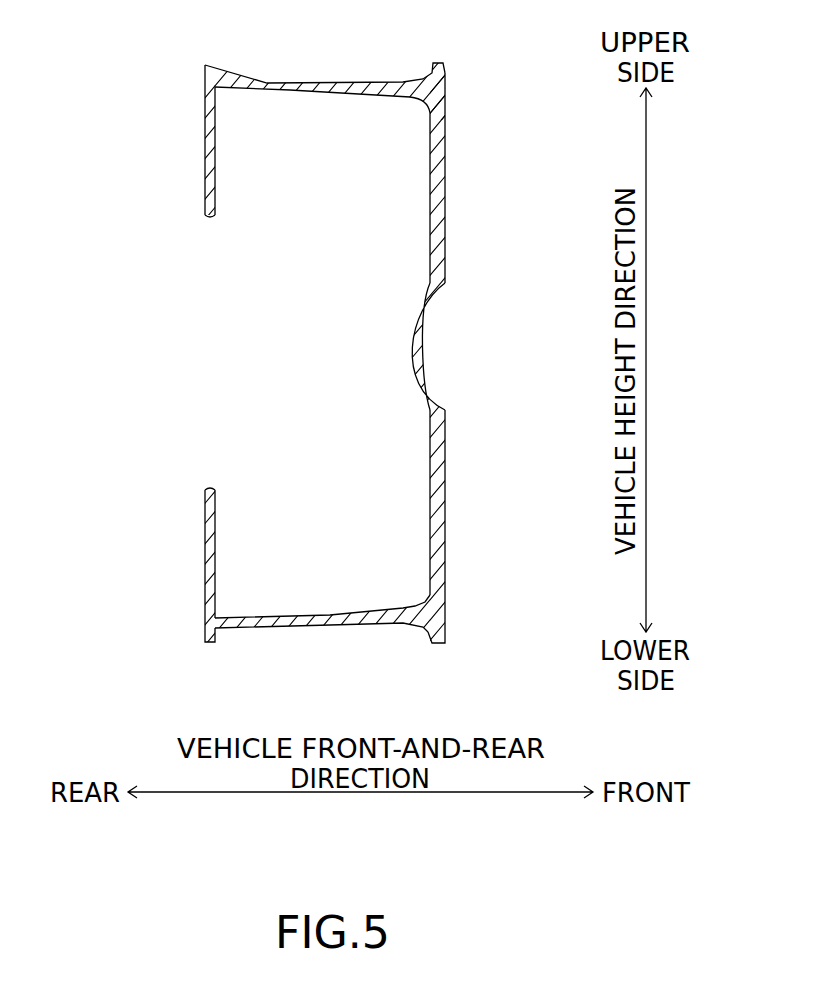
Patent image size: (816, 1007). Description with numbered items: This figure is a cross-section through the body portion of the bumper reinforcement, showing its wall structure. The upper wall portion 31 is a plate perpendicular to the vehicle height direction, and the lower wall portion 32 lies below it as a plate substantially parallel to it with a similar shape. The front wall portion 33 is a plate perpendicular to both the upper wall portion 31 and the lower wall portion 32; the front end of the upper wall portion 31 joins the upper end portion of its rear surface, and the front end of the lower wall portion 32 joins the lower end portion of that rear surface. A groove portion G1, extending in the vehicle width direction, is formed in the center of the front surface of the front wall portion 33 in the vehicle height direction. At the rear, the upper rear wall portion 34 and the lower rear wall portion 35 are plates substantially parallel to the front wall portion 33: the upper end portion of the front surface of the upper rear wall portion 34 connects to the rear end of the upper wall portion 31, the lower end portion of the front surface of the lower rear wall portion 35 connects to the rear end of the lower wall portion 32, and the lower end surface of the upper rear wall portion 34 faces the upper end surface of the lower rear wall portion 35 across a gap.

The upper wall portion 31 is at (333, 80).
The lower wall portion 32 is at (340, 625).
The front wall portion 33 is at (446, 235).
The upper rear wall portion 34 is at (205, 153).
The lower rear wall portion 35 is at (205, 553).
The groove portion G1 is at (424, 350).